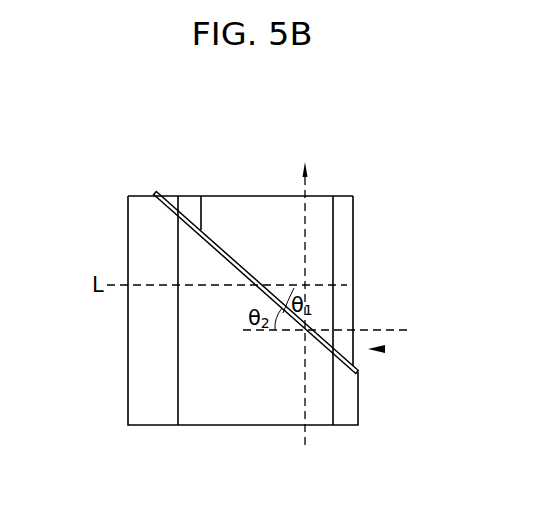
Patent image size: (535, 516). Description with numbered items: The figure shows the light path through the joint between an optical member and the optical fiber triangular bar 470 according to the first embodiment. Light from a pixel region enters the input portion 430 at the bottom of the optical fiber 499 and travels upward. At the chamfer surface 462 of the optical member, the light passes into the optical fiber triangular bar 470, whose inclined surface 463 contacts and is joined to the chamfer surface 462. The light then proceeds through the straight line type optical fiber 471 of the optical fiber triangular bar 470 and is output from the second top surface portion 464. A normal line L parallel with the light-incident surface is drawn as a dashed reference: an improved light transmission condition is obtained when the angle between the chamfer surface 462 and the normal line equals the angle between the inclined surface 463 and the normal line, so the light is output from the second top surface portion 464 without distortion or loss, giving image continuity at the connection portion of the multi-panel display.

The input portion 430 is at (242, 427).
The chamfer surface 462 is at (172, 203).
The inclined surface 463 is at (313, 328).
The second top surface portion 464 is at (238, 195).
The optical fiber triangular bar 470 is at (385, 349).
The optical fiber 471 is at (287, 244).
The optical fiber 499 is at (197, 333).